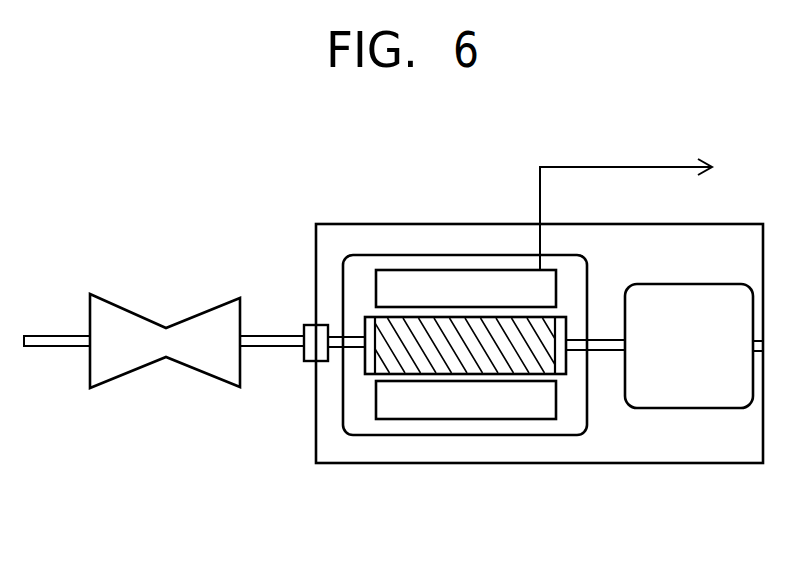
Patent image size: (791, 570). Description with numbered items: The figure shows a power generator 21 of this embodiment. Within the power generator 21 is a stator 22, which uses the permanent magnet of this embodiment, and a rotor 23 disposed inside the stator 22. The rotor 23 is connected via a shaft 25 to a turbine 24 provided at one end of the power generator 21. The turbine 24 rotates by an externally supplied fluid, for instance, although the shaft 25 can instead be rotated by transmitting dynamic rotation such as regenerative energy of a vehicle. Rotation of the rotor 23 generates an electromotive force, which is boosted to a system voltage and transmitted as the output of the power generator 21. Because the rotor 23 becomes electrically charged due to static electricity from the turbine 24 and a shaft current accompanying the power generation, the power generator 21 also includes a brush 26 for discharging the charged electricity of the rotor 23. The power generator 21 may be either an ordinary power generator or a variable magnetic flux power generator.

The power generator 21 is at (362, 223).
The stator 22 is at (432, 410).
The rotor 23 is at (480, 367).
The turbine 24 is at (208, 309).
The shaft 25 is at (280, 350).
The brush 26 is at (678, 393).